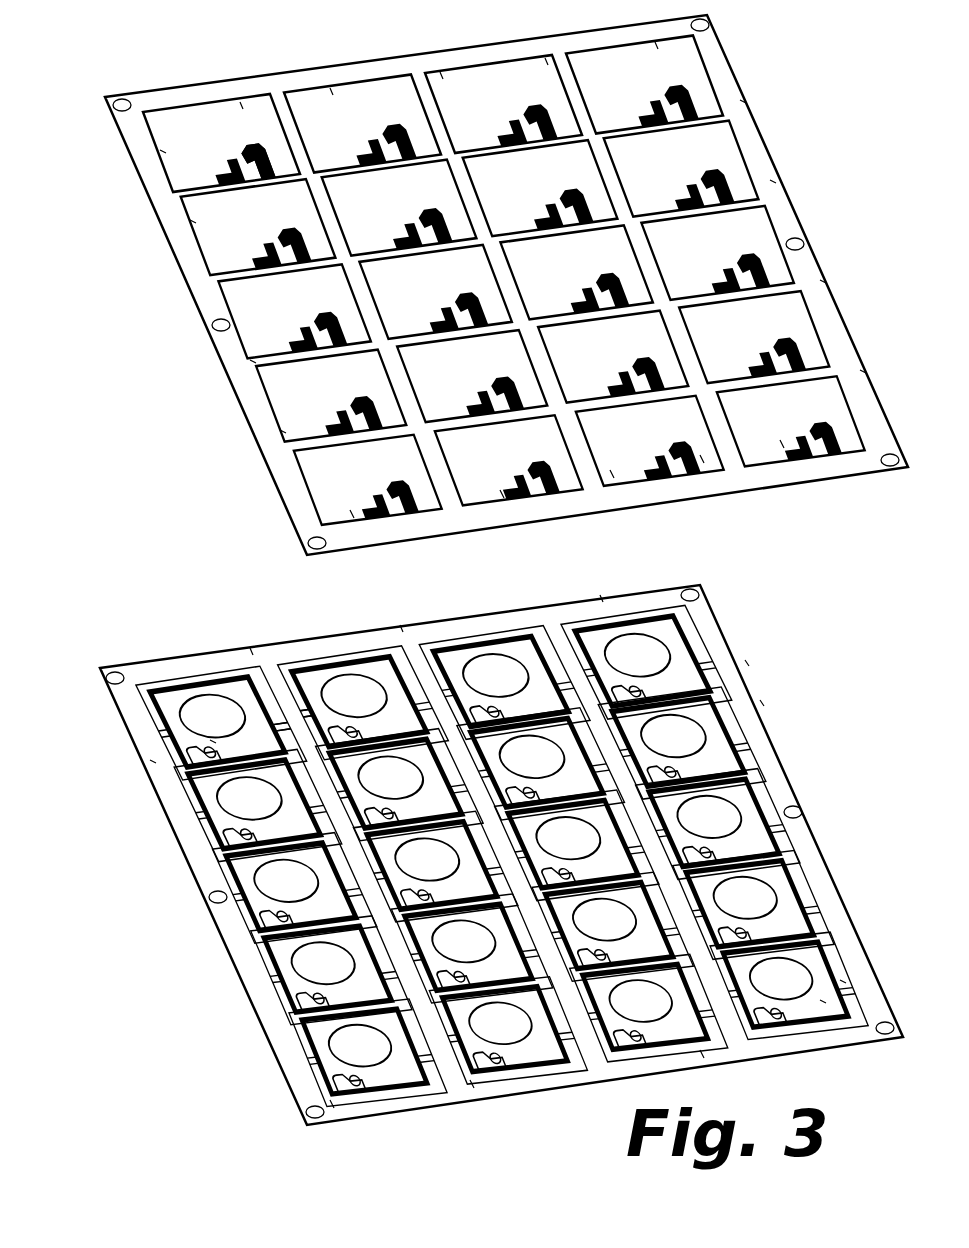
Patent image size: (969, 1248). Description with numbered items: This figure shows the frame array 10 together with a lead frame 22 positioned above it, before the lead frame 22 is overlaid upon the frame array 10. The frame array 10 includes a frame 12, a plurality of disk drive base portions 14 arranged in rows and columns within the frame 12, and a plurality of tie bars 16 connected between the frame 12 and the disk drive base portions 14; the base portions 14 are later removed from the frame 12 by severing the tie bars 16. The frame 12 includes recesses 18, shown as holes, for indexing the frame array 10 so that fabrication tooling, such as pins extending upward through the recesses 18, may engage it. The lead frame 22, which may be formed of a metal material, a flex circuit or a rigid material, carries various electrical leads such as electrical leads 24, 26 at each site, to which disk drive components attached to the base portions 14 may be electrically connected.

The frame array 10 is at (466, 850).
The frame 12 is at (155, 790).
The disk drive base portion 14 is at (173, 690).
The tie bar 16 is at (289, 712).
The recess 18 is at (98, 667).
The lead frame 22 is at (432, 52).
The electrical lead 24 is at (234, 178).
The electrical lead 26 is at (250, 150).